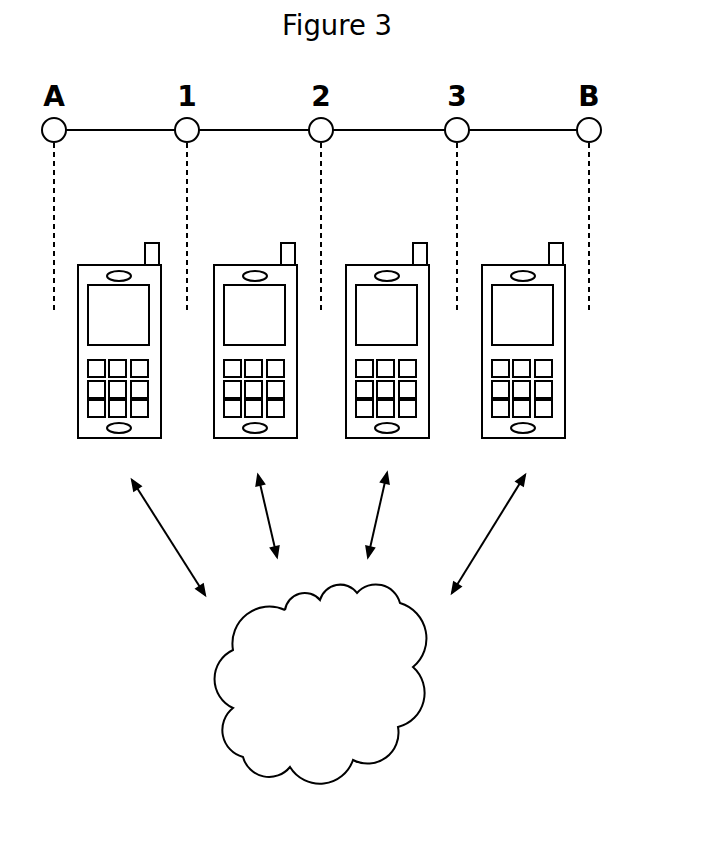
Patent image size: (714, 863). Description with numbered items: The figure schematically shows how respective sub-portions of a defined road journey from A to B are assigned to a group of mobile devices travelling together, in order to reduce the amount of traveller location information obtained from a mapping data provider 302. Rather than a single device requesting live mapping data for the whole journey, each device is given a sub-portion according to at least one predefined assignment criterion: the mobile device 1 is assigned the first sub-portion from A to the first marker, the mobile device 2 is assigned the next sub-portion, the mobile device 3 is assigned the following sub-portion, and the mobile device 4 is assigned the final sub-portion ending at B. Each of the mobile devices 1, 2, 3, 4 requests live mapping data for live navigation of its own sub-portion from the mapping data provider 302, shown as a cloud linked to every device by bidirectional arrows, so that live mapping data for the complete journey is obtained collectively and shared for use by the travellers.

The mapping data provider 302 is at (321, 683).
The mobile device 1 is at (119, 340).
The mobile device 2 is at (255, 340).
The mobile device 3 is at (387, 340).
The mobile device 4 is at (523, 340).